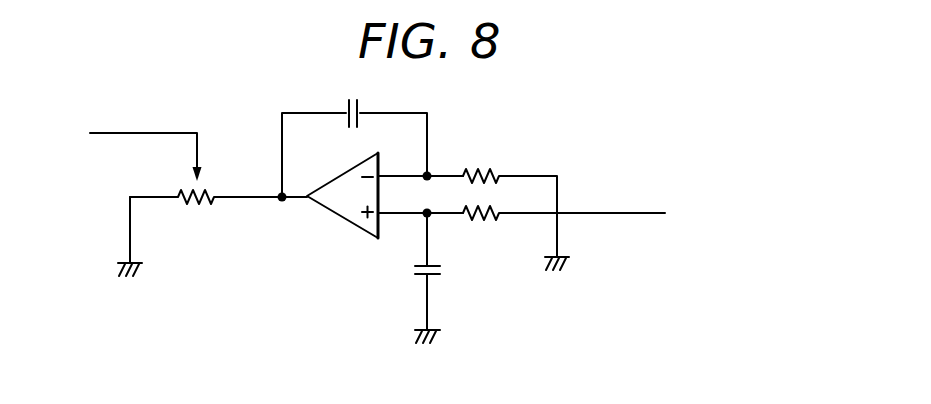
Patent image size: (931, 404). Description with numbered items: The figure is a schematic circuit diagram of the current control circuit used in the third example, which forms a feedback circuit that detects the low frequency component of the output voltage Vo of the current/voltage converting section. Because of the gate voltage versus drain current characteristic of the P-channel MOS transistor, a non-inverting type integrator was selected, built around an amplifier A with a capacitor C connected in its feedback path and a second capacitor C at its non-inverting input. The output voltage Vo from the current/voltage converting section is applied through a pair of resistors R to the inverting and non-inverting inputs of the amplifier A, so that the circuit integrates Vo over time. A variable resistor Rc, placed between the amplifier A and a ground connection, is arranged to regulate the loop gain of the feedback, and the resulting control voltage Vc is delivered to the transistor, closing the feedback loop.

The control voltage Vc is at (160, 142).
The variable resistor Rc is at (206, 213).
The amplifier A is at (342, 195).
The capacitor C is at (361, 208).
The resistor R is at (510, 199).
The output voltage Vo is at (691, 198).